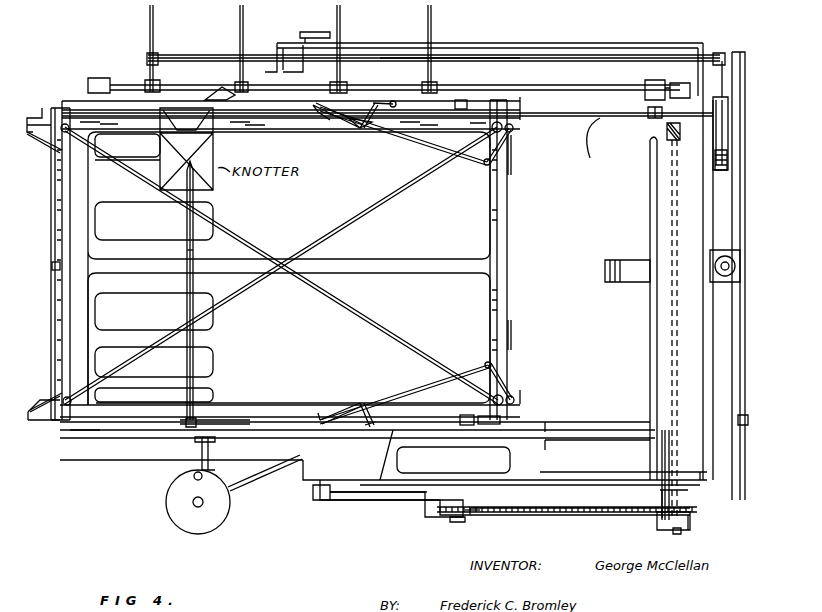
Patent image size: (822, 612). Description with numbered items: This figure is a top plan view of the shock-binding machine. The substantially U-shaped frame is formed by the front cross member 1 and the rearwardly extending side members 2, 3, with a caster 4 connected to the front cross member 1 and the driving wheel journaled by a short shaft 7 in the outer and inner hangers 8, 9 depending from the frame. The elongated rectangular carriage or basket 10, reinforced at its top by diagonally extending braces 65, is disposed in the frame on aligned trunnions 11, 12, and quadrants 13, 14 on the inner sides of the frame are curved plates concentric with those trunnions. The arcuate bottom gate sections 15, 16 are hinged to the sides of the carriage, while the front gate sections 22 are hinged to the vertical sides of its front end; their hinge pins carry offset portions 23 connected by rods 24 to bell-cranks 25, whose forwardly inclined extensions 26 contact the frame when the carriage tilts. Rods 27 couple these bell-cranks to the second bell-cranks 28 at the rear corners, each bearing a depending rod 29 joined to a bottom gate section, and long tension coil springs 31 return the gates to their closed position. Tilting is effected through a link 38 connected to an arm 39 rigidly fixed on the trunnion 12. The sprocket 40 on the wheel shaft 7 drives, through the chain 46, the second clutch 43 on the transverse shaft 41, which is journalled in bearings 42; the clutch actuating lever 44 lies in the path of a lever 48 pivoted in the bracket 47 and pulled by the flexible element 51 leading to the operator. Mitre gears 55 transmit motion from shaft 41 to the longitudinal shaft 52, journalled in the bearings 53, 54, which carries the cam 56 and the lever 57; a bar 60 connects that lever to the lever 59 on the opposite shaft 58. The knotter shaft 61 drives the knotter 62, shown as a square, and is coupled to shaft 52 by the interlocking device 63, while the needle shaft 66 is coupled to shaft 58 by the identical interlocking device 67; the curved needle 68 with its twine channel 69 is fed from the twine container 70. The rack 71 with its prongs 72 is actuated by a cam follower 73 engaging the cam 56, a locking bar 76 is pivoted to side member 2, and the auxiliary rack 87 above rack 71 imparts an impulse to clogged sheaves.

The front cross member 1 is at (650, 344).
The side member 2 is at (489, 44).
The side member 3 is at (638, 442).
The caster 4 is at (630, 262).
The short shaft 7 is at (450, 520).
The outer hanger 8 is at (558, 492).
The inner hanger 9 is at (550, 423).
The carriage or basket 10 is at (505, 303).
The trunnion 11 is at (304, 32).
The trunnion 12 is at (322, 502).
The quadrant 13 is at (212, 92).
The quadrant 14 is at (202, 438).
The gate section 15 is at (488, 229).
The gate section 16 is at (488, 289).
The gate sections 22 is at (514, 202).
The offset portion 23 is at (506, 155).
The rods 24 is at (404, 140).
The bell-cranks 25 is at (340, 128).
The forwardly inclined extensions 26 is at (401, 104).
The rods 27 is at (68, 98).
The bell-cranks 28 is at (36, 120).
The rod 29 is at (38, 138).
The tension coil springs 31 is at (50, 288).
The link 38 is at (420, 502).
The arm 39 is at (355, 500).
The sprocket 40 is at (470, 513).
The shaft 41 is at (667, 128).
The bearings 42 is at (650, 117).
The second clutch 43 is at (690, 520).
The actuating lever 44 is at (682, 530).
The chain 46 is at (535, 525).
The bracket 47 is at (662, 496).
The lever 48 is at (656, 519).
The flexible element 51 is at (673, 442).
The shaft 52 is at (536, 124).
The bearing 53 is at (614, 118).
The bearing 54 is at (524, 104).
The mitre gears 55 is at (676, 126).
The cam 56 is at (724, 170).
The lever 57 is at (734, 52).
The shaft 58 is at (528, 404).
The lever 59 is at (743, 426).
The bar 60 is at (742, 328).
The knotter shaft 61 is at (463, 114).
The knotter 62 is at (186, 149).
The interlocking device 63 is at (496, 121).
The diagonal braces 65 is at (279, 264).
The needle shaft 66 is at (140, 430).
The interlocking device 67 is at (474, 414).
The needle 68 is at (196, 190).
The channel 69 is at (194, 248).
The container 70 is at (178, 516).
The rack 71 is at (218, 56).
The prongs 72 is at (473, 57).
The cam follower 73 is at (720, 52).
The locking bar 76 is at (355, 42).
The auxiliary rack 87 is at (118, 83).